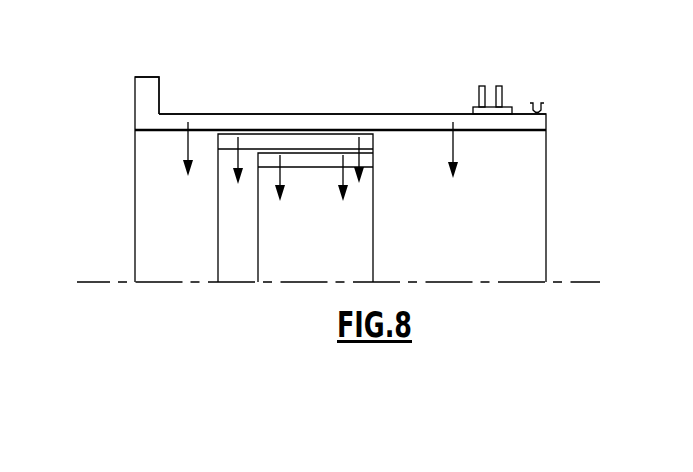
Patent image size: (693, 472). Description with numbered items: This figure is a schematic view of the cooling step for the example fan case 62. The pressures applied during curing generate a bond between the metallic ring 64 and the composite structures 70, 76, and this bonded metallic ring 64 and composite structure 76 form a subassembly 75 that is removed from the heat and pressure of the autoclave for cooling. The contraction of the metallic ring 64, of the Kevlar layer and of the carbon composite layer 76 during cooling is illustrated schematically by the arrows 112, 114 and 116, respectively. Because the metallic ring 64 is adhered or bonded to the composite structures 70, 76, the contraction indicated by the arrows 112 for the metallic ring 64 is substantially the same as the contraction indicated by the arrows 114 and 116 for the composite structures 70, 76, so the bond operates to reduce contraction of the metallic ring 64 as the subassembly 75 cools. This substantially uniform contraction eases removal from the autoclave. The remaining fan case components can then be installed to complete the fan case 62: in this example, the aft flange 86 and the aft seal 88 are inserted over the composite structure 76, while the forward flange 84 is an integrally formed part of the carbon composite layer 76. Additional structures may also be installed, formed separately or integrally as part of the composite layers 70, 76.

The fan case 62 is at (522, 47).
The metallic ring 64 is at (325, 160).
The composite structure 70 is at (307, 142).
The subassembly 75 is at (97, 106).
The carbon composite layer 76 is at (214, 122).
The forward flange 84 is at (166, 91).
The aft flange 86 is at (503, 100).
The aft seal 88 is at (546, 108).
The arrows 112 is at (284, 170).
The arrows 114 is at (238, 160).
The arrows 116 is at (186, 147).